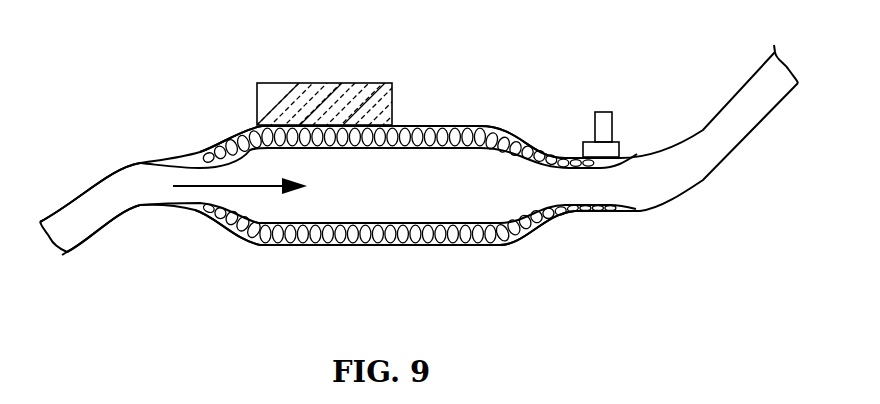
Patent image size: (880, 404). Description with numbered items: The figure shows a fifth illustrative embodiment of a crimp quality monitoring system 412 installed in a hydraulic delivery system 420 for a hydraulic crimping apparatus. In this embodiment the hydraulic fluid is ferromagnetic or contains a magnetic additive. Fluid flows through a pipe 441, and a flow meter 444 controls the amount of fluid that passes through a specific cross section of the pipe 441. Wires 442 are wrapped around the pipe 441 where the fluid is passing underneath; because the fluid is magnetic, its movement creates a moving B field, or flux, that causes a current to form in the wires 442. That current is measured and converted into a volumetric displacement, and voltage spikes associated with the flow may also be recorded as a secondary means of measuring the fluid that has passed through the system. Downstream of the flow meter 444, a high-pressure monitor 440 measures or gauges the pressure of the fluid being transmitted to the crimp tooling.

The crimp quality monitoring system 412 is at (511, 252).
The hydraulic delivery system 420 is at (100, 250).
The high-pressure monitor 440 is at (619, 152).
The pipe 441 is at (314, 214).
The wires 442 is at (421, 232).
The flow meter 444 is at (311, 83).